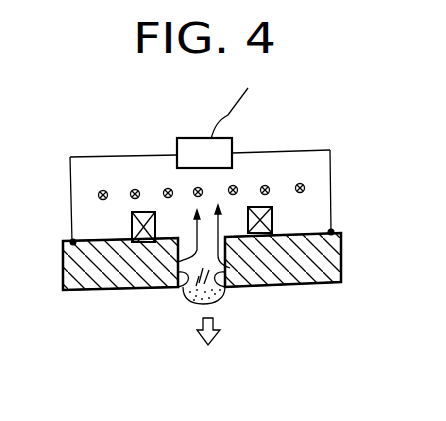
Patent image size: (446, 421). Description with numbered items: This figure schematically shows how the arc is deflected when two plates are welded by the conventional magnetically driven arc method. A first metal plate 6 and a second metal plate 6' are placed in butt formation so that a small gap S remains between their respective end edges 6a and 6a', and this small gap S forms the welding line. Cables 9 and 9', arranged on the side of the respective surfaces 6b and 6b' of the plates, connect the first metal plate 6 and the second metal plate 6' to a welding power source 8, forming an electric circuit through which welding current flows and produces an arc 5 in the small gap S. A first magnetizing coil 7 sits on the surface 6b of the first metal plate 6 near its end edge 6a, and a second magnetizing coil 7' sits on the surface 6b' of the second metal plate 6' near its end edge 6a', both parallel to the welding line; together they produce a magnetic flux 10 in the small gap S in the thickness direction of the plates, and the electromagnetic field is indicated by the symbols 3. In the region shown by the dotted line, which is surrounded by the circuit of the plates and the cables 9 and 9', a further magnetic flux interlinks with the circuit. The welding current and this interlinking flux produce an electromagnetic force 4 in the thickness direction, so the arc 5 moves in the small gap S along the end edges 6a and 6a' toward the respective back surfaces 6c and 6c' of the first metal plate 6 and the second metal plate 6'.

The electromagnetic field 3 is at (267, 188).
The electromagnetic force 4 is at (214, 334).
The arc 5 is at (227, 289).
The first metal plate 6 is at (283, 300).
The second metal plate 6' is at (120, 306).
The end edge of first metal plate 6a is at (253, 275).
The end edge of second metal plate 6a' is at (170, 283).
The surface of first metal plate 6b is at (300, 216).
The surface of second metal plate 6b' is at (103, 217).
The back surface of first metal plate 6c is at (283, 311).
The back surface of second metal plate 6c' is at (119, 317).
The first magnetizing coil 7 is at (303, 203).
The second magnetizing coil 7' is at (151, 178).
The welding power source 8 is at (201, 138).
The cable 9 is at (283, 163).
The cable 9' is at (124, 170).
The magnetic flux 10 is at (222, 218).
The small gap S is at (190, 298).